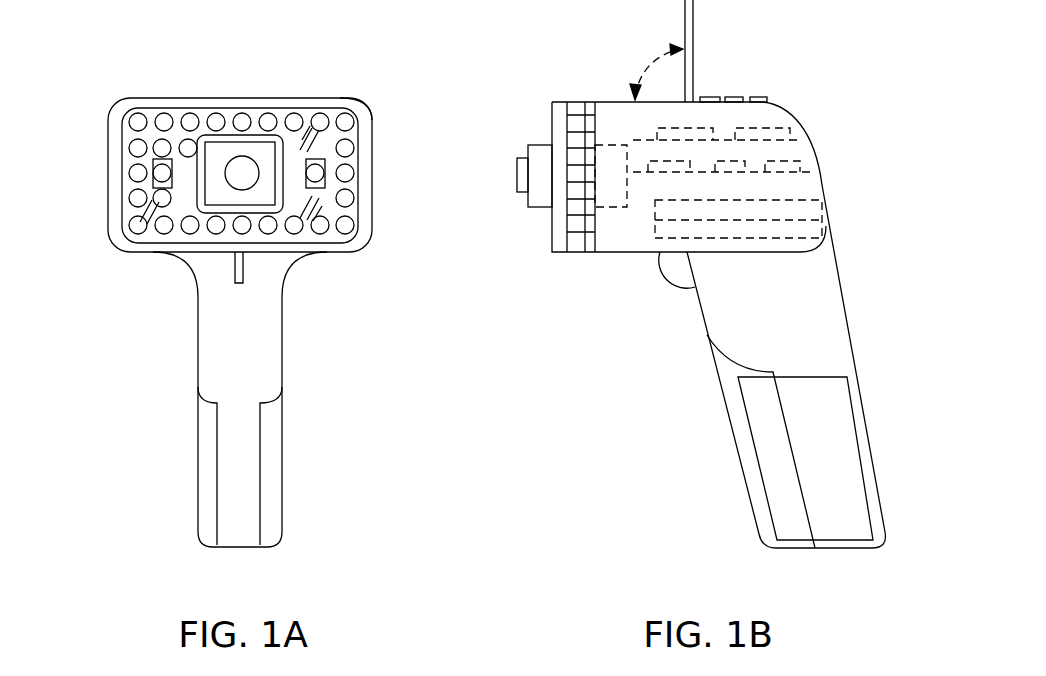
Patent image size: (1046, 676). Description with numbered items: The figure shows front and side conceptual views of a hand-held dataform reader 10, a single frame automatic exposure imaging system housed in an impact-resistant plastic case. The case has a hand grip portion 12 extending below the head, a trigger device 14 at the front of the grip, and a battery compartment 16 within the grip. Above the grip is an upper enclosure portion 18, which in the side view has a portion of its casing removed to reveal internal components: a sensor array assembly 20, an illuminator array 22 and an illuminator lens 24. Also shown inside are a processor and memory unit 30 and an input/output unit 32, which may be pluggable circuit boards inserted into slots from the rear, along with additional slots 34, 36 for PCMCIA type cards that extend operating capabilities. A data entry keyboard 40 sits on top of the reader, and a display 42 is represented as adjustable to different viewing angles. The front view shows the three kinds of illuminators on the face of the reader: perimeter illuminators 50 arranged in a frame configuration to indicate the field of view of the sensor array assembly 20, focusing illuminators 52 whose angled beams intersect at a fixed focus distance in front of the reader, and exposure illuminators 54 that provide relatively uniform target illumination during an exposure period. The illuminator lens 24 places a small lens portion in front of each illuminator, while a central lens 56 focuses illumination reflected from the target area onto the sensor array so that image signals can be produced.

In FIG. 1A, the dataform reader 10 is at (198, 357).
In FIG. 1B, the dataform reader 10 is at (847, 317).
In FIG. 1A, the hand grip portion 12 is at (282, 498).
In FIG. 1B, the hand grip portion 12 is at (873, 457).
In FIG. 1A, the trigger device 14 is at (235, 267).
In FIG. 1B, the trigger device 14 is at (670, 277).
In FIG. 1B, the battery compartment 16 is at (838, 528).
In FIG. 1A, the upper enclosure portion 18 is at (120, 105).
In FIG. 1B, the upper enclosure portion 18 is at (615, 253).
In FIG. 1A, the sensor array assembly 20 is at (264, 200).
In FIG. 1B, the sensor array assembly 20 is at (607, 162).
In FIG. 1A, the illuminator array 22 is at (353, 105).
In FIG. 1B, the illuminator array 22 is at (583, 128).
In FIG. 1A, the illuminator lens 24 is at (122, 130).
In FIG. 1B, the illuminator lens 24 is at (555, 253).
In FIG. 1B, the processor and memory unit 30 is at (723, 127).
In FIG. 1B, the input/output unit 32 is at (750, 157).
In FIG. 1B, the additional slot 34 is at (813, 210).
In FIG. 1B, the additional slot 36 is at (813, 232).
In FIG. 1B, the data entry keyboard 40 is at (730, 97).
In FIG. 1B, the display 42 is at (625, 100).
In FIG. 1A, the perimeter illuminators 50 is at (130, 152).
In FIG. 1A, the focusing illuminators 52 is at (316, 165).
In FIG. 1A, the exposure illuminators 54 is at (160, 140).
In FIG. 1A, the central lens 56 is at (240, 165).
In FIG. 1B, the central lens 56 is at (517, 167).